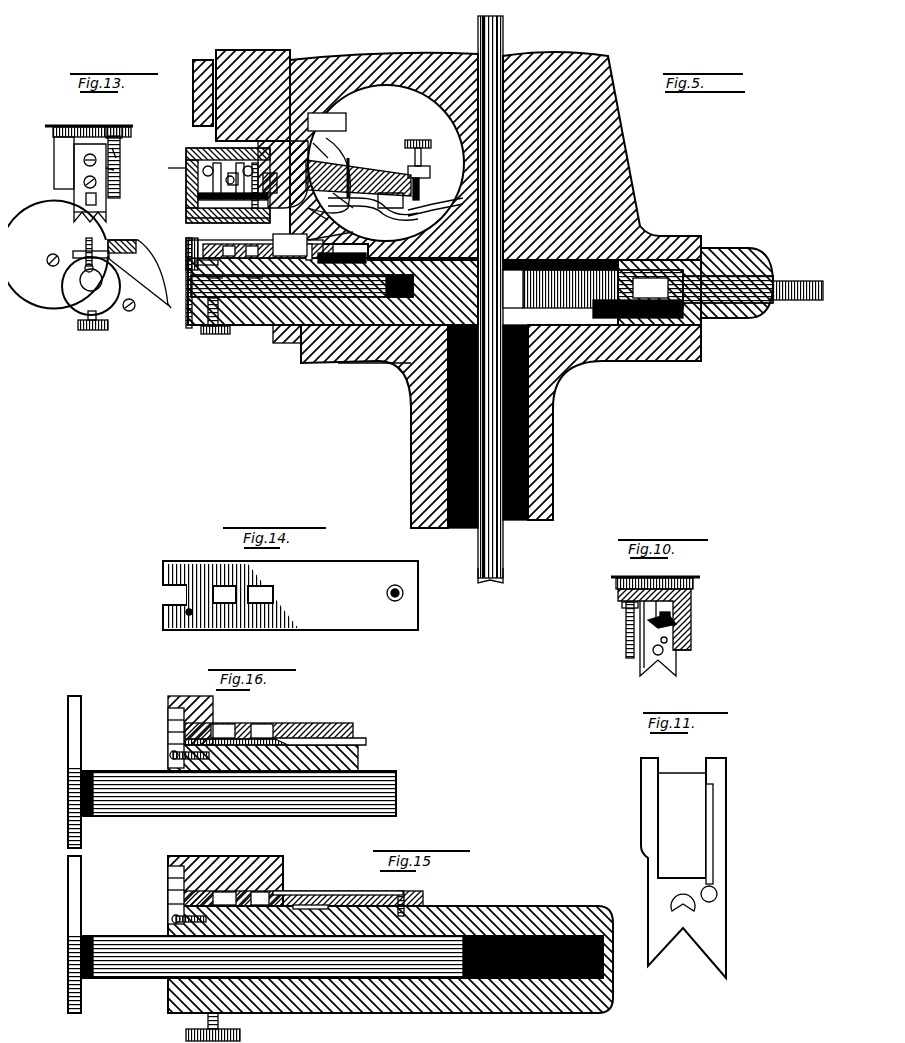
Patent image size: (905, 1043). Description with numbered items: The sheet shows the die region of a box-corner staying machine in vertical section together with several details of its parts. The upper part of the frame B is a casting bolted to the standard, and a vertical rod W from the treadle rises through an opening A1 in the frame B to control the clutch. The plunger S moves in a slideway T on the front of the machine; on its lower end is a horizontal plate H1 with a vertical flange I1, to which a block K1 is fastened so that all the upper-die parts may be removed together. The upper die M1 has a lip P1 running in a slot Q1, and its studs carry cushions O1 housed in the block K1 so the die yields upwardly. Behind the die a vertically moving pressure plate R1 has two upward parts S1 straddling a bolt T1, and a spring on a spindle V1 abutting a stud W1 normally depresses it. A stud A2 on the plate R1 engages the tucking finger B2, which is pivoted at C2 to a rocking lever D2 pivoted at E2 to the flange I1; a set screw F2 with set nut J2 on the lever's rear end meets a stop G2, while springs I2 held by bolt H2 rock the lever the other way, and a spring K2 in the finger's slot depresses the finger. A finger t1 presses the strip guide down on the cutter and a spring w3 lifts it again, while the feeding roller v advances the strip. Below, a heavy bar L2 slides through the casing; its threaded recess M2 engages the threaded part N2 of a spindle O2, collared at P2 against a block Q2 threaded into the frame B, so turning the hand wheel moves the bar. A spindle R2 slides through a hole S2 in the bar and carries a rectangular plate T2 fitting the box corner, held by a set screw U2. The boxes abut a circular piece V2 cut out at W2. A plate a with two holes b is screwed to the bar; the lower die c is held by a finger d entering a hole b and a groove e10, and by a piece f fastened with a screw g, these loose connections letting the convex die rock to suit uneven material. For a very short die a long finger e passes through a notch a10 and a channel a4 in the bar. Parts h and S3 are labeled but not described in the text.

In FIG. 5, the upper part of the frame B is at (372, 50).
In FIG. 5, the opening A1 is at (495, 46).
In FIG. 5, the vertical rod W is at (495, 526).
In FIG. 5, the plunger S is at (234, 42).
In FIG. 13, the plunger S is at (98, 118).
In FIG. 5, the upwardly extending parts S1 is at (272, 167).
In FIG. 11, the upwardly extending parts S1 is at (698, 768).
In FIG. 5, the slideway T is at (185, 100).
In FIG. 5, the screw or bolt T1 is at (306, 163).
In FIG. 10, the screw or bolt T1 is at (640, 621).
In FIG. 5, the block K1 is at (185, 140).
In FIG. 5, the vertical flange I1 is at (378, 148).
In FIG. 13, the vertical flange I1 is at (70, 154).
In FIG. 10, the vertical flange I1 is at (683, 642).
In FIG. 5, the slot Q1 is at (178, 178).
In FIG. 13, the slot Q1 is at (78, 188).
In FIG. 5, the lip P1 is at (178, 194).
In FIG. 13, the lip P1 is at (108, 185).
In FIG. 5, the upper die M1 is at (178, 210).
In FIG. 13, the upper die M1 is at (66, 205).
In FIG. 5, the vertically moving plate R1 is at (273, 183).
In FIG. 10, the vertically moving plate R1 is at (668, 660).
In FIG. 11, the vertically moving plate R1 is at (718, 912).
In FIG. 5, the cushions O1 is at (237, 183).
In FIG. 13, the cushions O1 is at (98, 162).
In FIG. 13, the finger t1 is at (112, 150).
In FIG. 5, the horizontal plate H1 is at (340, 150).
In FIG. 10, the horizontal plate H1 is at (610, 582).
In FIG. 5, the bolt H2 is at (362, 152).
In FIG. 5, the pivot C2 is at (312, 140).
In FIG. 5, the set screw F2 is at (418, 142).
In FIG. 5, the set nut J2 is at (426, 177).
In FIG. 5, the pivot E2 is at (393, 195).
In FIG. 5, the stop G2 is at (435, 207).
In FIG. 5, the rocking lever D2 is at (373, 213).
In FIG. 5, the spring K2 is at (336, 205).
In FIG. 5, the stud A2 is at (310, 218).
In FIG. 10, the stud A2 is at (646, 644).
In FIG. 11, the stud A2 is at (664, 897).
In FIG. 5, the tucking finger B2 is at (330, 230).
In FIG. 5, the circular piece of metal V2 is at (285, 336).
In FIG. 13, the circular piece of metal V2 is at (42, 298).
In FIG. 5, the springs I2 is at (515, 280).
In FIG. 13, the springs I2 is at (54, 262).
In FIG. 16, the springs I2 is at (350, 742).
In FIG. 15, the springs I2 is at (460, 996).
In FIG. 5, the heavy bar L2 is at (258, 318).
In FIG. 5, the spindle R2 is at (302, 286).
In FIG. 16, the spindle R2 is at (238, 793).
In FIG. 15, the spindle R2 is at (342, 957).
In FIG. 5, the hole S2 is at (385, 345).
In FIG. 15, the hole S2 is at (525, 928).
In FIG. 5, the plate T2 is at (178, 300).
In FIG. 13, the plate T2 is at (170, 315).
In FIG. 16, the plate T2 is at (60, 714).
In FIG. 15, the plate T2 is at (73, 868).
In FIG. 5, the set screw U2 is at (215, 324).
In FIG. 13, the set screw U2 is at (80, 322).
In FIG. 15, the set screw U2 is at (232, 1025).
In FIG. 5, the threaded part N2 is at (580, 320).
In FIG. 5, the collar P2 is at (693, 238).
In FIG. 5, the recess M2 is at (540, 258).
In FIG. 5, the spindle O2 is at (638, 294).
In FIG. 5, the block or stop Q2 is at (753, 283).
In FIG. 5, the plate a is at (284, 243).
In FIG. 14, the plate a is at (290, 595).
In FIG. 16, the plate a is at (300, 716).
In FIG. 15, the plate a is at (332, 875).
In FIG. 16, the elongated channel a4 is at (358, 728).
In FIG. 14, the notch a10 is at (155, 587).
In FIG. 5, the holes b is at (240, 239).
In FIG. 14, the holes b is at (248, 580).
In FIG. 16, the holes b is at (250, 716).
In FIG. 15, the holes b is at (236, 884).
In FIG. 13, the lower die c is at (94, 248).
In FIG. 16, the lower die c is at (208, 714).
In FIG. 15, the lower die c is at (276, 866).
In FIG. 5, the downwardly extending piece of metal d is at (256, 287).
In FIG. 15, the downwardly extending piece of metal d is at (272, 905).
In FIG. 5, the long finger or wire e is at (219, 287).
In FIG. 16, the long finger or wire e is at (160, 722).
In FIG. 15, the longitudinal passage or groove e10 is at (300, 890).
In FIG. 5, the piece of metal f is at (178, 242).
In FIG. 15, the piece of metal f is at (160, 871).
In FIG. 5, the screw g is at (188, 256).
In FIG. 16, the screw g is at (162, 746).
In FIG. 15, the screw g is at (164, 912).
In FIG. 5, the pin h is at (328, 249).
In FIG. 13, the feeding roller v is at (138, 266).
In FIG. 13, the spring w3 is at (129, 235).
In FIG. 13, the cut-out W2 is at (68, 244).
In FIG. 13, the hub S3 is at (91, 280).
In FIG. 10, the spindle V1 is at (683, 583).
In FIG. 11, the spindle V1 is at (698, 824).
In FIG. 10, the stud W1 is at (665, 606).